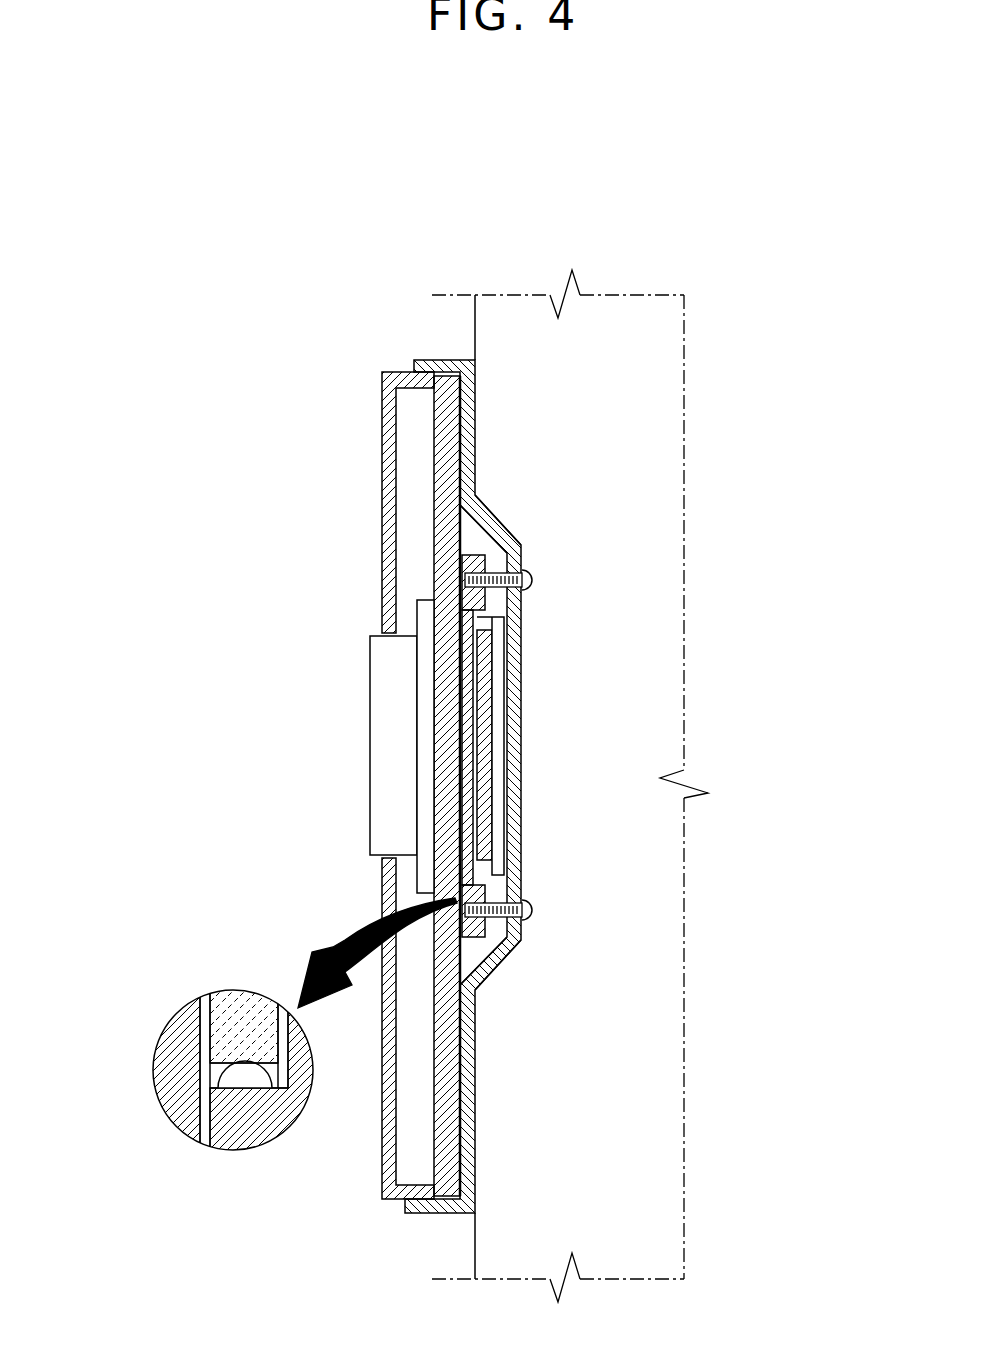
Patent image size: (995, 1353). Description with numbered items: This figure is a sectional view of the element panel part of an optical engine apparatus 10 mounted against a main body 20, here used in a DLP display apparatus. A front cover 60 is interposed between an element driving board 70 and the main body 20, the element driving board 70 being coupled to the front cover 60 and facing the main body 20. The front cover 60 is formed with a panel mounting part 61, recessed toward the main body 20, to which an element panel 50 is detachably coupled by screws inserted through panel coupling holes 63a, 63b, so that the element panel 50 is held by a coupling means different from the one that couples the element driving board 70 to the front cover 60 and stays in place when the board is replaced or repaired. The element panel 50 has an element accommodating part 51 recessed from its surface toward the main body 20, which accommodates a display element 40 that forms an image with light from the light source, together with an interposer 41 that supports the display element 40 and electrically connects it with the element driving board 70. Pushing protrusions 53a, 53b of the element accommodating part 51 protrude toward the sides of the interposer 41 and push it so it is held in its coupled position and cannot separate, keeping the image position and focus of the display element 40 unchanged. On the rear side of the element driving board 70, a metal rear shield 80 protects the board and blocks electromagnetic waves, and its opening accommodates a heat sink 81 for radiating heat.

The optical engine apparatus 10 is at (225, 230).
The main body 20 is at (628, 318).
The display element 40 is at (493, 720).
The interposer 41 is at (476, 800).
The element panel 50 is at (470, 552).
The element accommodating part 51 is at (470, 620).
The pushing protrusion 53a is at (468, 590).
The pushing protrusion 53b is at (460, 890).
The front cover 60 is at (475, 408).
The panel mounting part 61 is at (520, 540).
The panel coupling hole 63a is at (524, 562).
The panel coupling hole 63b is at (524, 892).
The element driving board 70 is at (445, 445).
The rear shield 80 is at (388, 512).
The heat sink 81 is at (385, 742).